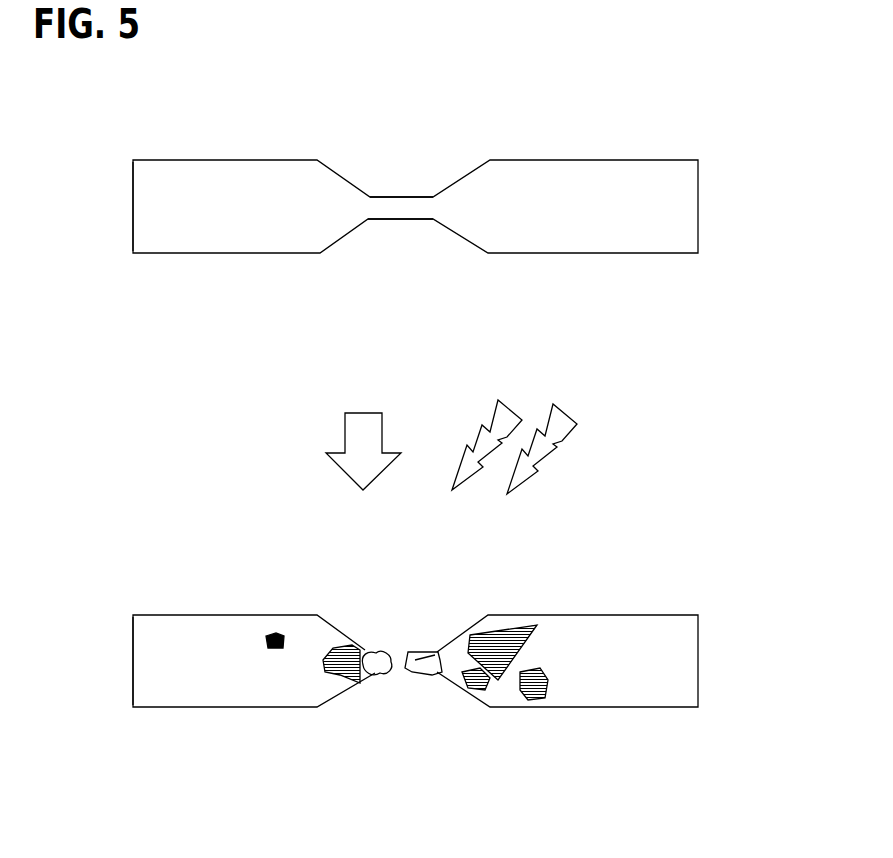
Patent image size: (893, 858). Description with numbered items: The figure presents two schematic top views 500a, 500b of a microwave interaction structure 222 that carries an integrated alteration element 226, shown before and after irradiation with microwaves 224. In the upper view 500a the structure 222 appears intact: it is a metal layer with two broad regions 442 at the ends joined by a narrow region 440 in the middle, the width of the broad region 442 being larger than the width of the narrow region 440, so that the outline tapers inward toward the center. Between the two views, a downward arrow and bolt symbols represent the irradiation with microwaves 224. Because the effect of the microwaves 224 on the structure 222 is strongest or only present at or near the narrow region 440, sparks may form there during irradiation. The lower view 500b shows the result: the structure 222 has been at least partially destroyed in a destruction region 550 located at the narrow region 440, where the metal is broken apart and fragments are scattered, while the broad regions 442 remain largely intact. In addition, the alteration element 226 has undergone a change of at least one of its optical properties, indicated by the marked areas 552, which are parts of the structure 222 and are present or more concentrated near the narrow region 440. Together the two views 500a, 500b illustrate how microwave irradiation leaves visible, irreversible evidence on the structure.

The schematic top view before irradiation 500a is at (700, 145).
The schematic top view after irradiation 500b is at (700, 598).
The microwave interaction structure 222 is at (79, 475).
The broad region 442 is at (133, 187).
The narrow region 440 is at (410, 520).
The alteration element 226 is at (427, 213).
The microwaves 224 is at (562, 432).
The destruction region 550 is at (399, 662).
The areas 552 is at (275, 635).